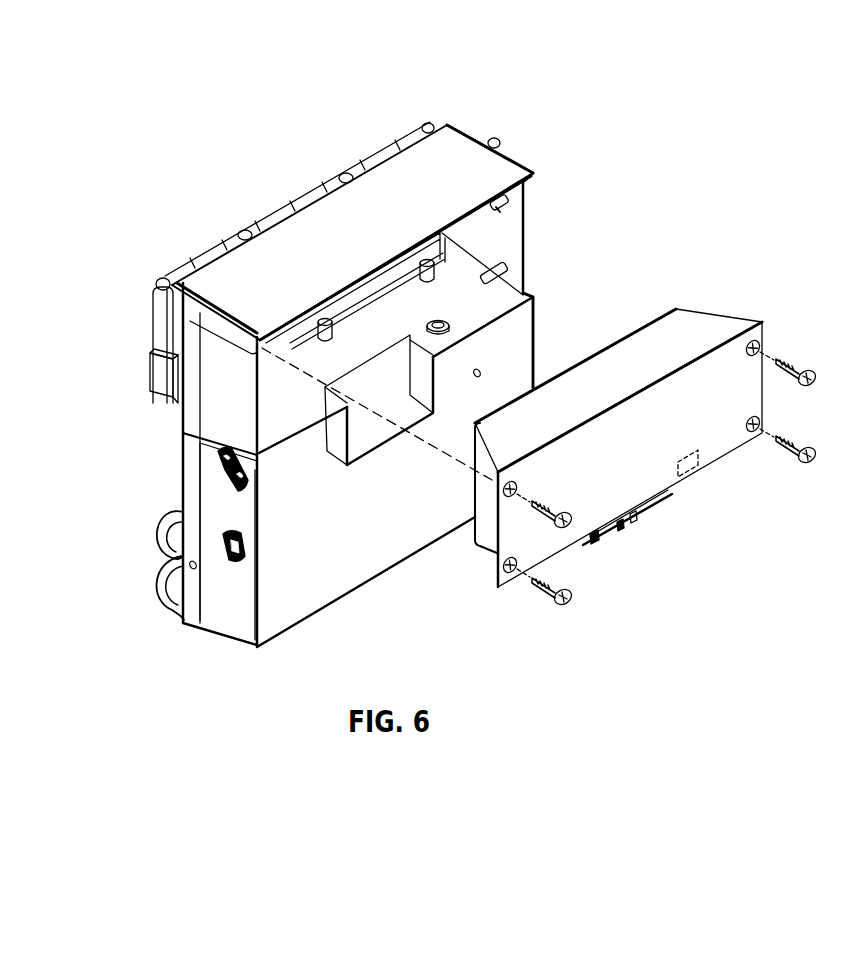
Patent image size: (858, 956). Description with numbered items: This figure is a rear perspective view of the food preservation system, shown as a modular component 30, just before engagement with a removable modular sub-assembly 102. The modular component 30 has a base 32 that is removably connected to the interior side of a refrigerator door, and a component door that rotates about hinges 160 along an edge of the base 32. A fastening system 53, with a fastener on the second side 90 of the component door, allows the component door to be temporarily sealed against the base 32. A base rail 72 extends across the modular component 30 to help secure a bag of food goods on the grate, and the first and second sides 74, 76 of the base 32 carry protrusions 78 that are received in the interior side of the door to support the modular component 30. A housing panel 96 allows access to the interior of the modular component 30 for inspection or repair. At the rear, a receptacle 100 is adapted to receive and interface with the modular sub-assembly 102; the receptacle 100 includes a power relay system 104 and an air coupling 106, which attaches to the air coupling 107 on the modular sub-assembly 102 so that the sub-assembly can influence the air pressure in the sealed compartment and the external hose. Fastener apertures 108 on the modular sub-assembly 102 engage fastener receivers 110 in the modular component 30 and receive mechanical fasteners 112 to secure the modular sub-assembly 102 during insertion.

The modular component 30 is at (604, 126).
The base 32 is at (228, 617).
The fastening system 53 is at (158, 380).
The base rail 72 is at (166, 526).
The first side 74 is at (535, 325).
The second side 76 is at (235, 506).
The protrusions 78 is at (246, 472).
The second side of the component door 90 is at (159, 322).
The housing panel 96 is at (413, 507).
The receptacle 100 is at (514, 228).
The modular sub-assembly 102 is at (685, 322).
The power relay system 104 is at (373, 367).
The air coupling 106 is at (450, 326).
The air coupling 107 is at (700, 478).
The fastener apertures 108 is at (518, 491).
The fastener receivers 110 is at (516, 200).
The mechanical fasteners 112 is at (571, 527).
The hinges 160 is at (427, 124).